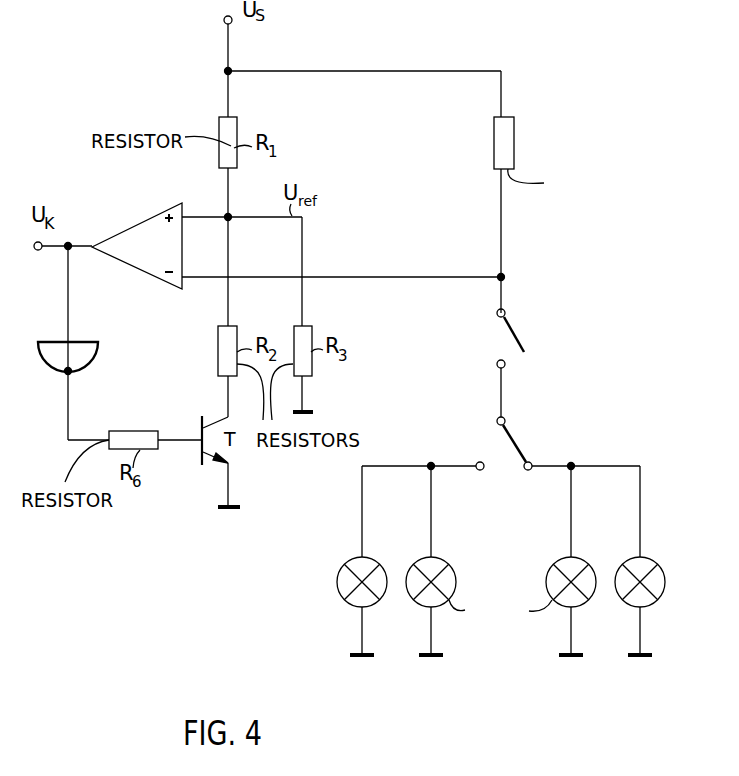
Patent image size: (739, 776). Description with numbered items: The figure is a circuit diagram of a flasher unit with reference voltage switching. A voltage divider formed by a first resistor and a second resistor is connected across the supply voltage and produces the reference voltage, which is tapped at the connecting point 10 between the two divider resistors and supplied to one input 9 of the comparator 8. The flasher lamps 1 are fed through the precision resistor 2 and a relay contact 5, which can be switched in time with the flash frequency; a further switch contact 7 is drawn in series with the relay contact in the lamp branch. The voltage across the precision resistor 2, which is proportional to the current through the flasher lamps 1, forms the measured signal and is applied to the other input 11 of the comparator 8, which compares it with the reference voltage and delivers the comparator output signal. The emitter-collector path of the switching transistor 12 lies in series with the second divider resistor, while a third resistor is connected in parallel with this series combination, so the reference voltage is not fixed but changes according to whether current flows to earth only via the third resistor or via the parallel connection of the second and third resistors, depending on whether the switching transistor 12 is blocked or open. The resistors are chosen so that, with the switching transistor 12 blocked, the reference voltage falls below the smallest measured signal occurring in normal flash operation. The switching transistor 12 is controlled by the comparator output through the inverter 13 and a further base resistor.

The flasher lamps 1 is at (358, 562).
The precision resistor 2 is at (514, 147).
The relay contact 5 is at (514, 336).
The switch 7 is at (517, 446).
The comparator 8 is at (121, 241).
The input of comparator 9 is at (184, 214).
The connecting point 10 is at (230, 215).
The other input of comparator 11 is at (183, 284).
The switching transistor 12 is at (202, 452).
The inverter 13 is at (58, 364).